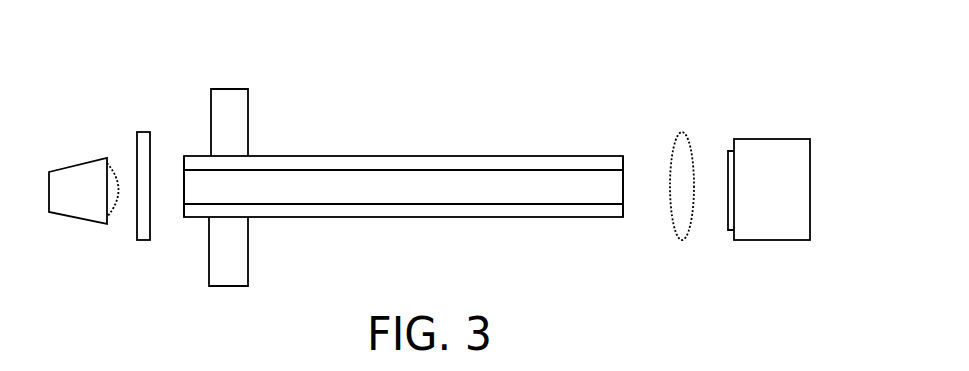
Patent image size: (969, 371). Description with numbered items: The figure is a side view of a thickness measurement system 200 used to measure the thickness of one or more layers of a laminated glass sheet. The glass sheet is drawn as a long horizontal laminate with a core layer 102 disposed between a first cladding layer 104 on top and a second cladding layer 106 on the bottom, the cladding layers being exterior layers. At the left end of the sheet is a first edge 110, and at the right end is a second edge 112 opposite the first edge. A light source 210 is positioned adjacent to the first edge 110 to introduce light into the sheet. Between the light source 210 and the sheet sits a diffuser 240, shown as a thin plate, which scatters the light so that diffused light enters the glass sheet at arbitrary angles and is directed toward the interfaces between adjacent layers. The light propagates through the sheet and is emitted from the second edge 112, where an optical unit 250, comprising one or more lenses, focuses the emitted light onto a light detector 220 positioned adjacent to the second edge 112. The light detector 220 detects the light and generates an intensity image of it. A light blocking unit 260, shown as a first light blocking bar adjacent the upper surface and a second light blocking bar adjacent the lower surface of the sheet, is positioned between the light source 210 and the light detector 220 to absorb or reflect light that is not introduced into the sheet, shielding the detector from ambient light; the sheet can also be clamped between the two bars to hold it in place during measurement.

The thickness measurement system 200 is at (756, 76).
The core layer 102 is at (337, 183).
The first cladding layer 104 is at (280, 163).
The second cladding layer 106 is at (308, 210).
The first edge 110 is at (184, 192).
The second edge 112 is at (623, 197).
The light source 210 is at (72, 175).
The light detector 220 is at (769, 148).
The diffuser 240 is at (140, 148).
The optical unit 250 is at (682, 163).
The light blocking unit 260 is at (228, 132).